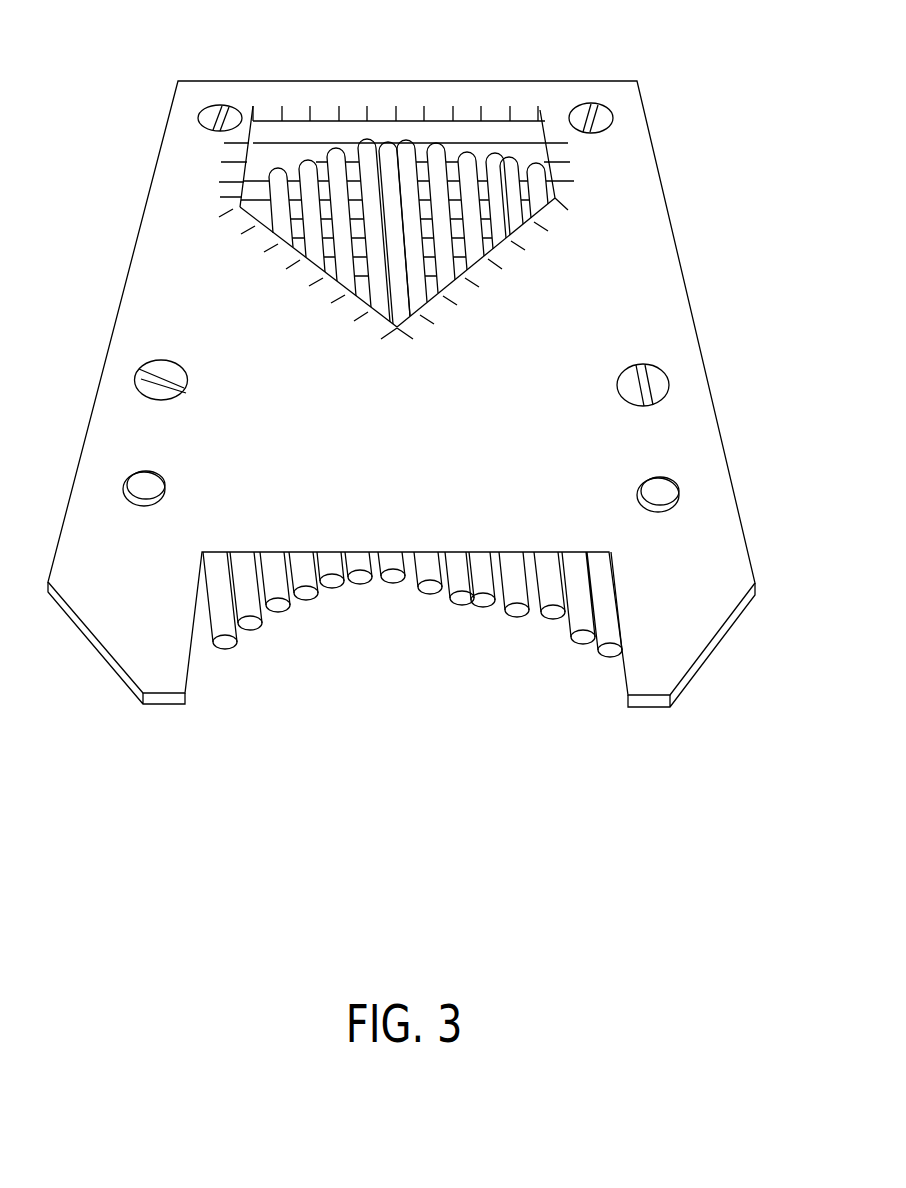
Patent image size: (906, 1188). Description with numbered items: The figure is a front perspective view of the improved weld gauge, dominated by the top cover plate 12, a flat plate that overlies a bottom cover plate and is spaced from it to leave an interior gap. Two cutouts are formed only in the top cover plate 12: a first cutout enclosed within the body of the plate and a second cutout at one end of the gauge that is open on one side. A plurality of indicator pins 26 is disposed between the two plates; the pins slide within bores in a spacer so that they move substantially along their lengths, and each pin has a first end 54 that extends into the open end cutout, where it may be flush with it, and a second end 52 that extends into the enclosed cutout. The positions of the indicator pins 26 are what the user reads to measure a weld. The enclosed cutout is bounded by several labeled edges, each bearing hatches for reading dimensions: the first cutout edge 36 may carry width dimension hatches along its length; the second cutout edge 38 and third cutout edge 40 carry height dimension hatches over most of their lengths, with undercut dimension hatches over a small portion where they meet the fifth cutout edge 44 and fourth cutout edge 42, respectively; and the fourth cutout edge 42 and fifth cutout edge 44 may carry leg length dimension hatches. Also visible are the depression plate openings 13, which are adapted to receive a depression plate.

The top cover plate 12 is at (650, 221).
The depression plate openings 13 is at (672, 484).
The indicator pins 26 is at (442, 642).
The first cutout edge 36 is at (326, 115).
The second cutout edge 38 is at (495, 162).
The third cutout edge 40 is at (232, 205).
The fourth cutout edge 42 is at (360, 302).
The fifth cutout edge 44 is at (480, 265).
The second end 52 is at (420, 150).
The first end 54 is at (225, 645).